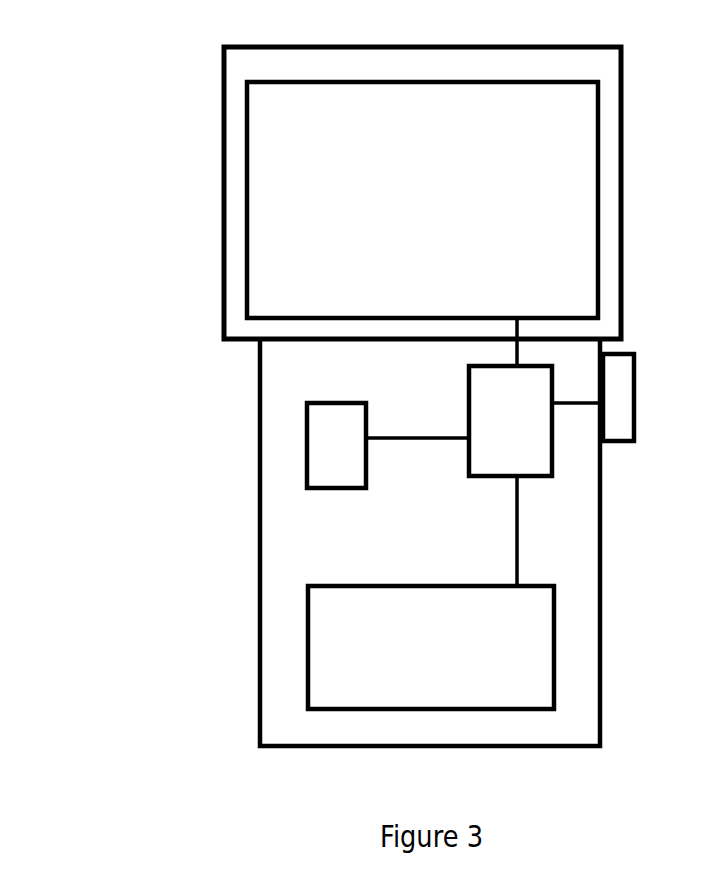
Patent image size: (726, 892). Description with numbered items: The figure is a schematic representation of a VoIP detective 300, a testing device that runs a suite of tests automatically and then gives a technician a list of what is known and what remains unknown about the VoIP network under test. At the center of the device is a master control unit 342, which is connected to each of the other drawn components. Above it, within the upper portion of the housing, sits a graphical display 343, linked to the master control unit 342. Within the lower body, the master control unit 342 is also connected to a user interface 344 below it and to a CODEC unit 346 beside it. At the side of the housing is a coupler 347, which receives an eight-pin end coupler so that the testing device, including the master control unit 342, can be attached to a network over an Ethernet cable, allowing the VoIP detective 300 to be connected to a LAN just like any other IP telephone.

The VoIP detective 300 is at (210, 132).
The graphical display 343 is at (529, 144).
The master control unit 342 is at (528, 436).
The user interface 344 is at (437, 659).
The CODEC unit 346 is at (354, 462).
The coupler 347 is at (625, 443).